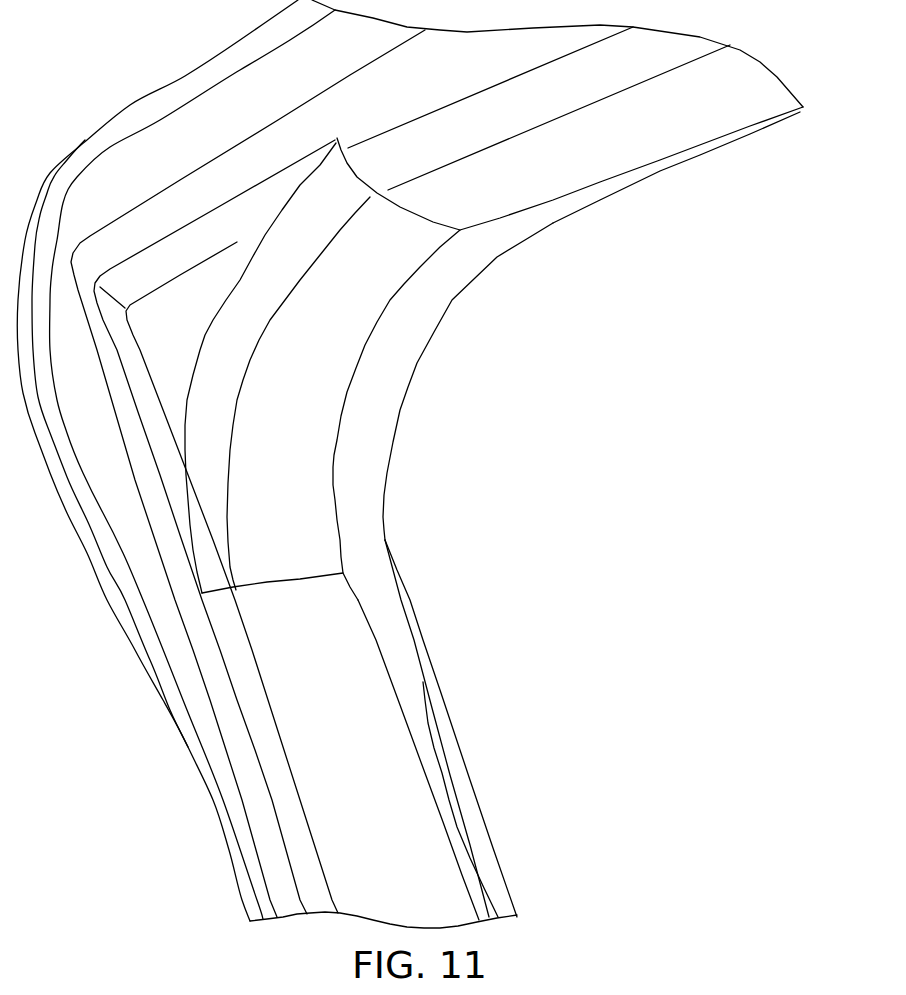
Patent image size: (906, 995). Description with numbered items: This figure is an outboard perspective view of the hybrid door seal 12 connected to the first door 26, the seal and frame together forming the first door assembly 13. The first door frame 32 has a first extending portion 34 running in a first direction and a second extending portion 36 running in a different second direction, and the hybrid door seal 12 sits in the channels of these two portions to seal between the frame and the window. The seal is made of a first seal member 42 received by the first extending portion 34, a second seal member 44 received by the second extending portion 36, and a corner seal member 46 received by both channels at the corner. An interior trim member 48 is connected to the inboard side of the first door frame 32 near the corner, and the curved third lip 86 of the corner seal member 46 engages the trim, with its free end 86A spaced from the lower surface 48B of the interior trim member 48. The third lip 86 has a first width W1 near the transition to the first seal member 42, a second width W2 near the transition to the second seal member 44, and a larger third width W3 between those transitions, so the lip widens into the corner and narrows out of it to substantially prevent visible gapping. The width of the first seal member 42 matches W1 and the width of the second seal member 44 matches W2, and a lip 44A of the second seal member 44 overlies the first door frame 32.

The hybrid door seal 12 is at (428, 371).
The first door assembly 13 is at (159, 876).
The first door 26 is at (122, 96).
The first door frame 32 is at (198, 707).
The first extending portion 34 is at (247, 137).
The second extending portion 36 is at (187, 633).
The first seal member 42 is at (671, 180).
The second seal member 44 is at (501, 891).
The lip 44A is at (462, 875).
The corner seal member 46 is at (463, 308).
The interior trim member 48 is at (157, 473).
The lower surface 48B is at (302, 345).
The third lip 86 is at (358, 463).
The free end 86A is at (383, 310).
The first width W1 is at (736, 90).
The second width W2 is at (397, 837).
The third width W3 is at (440, 418).